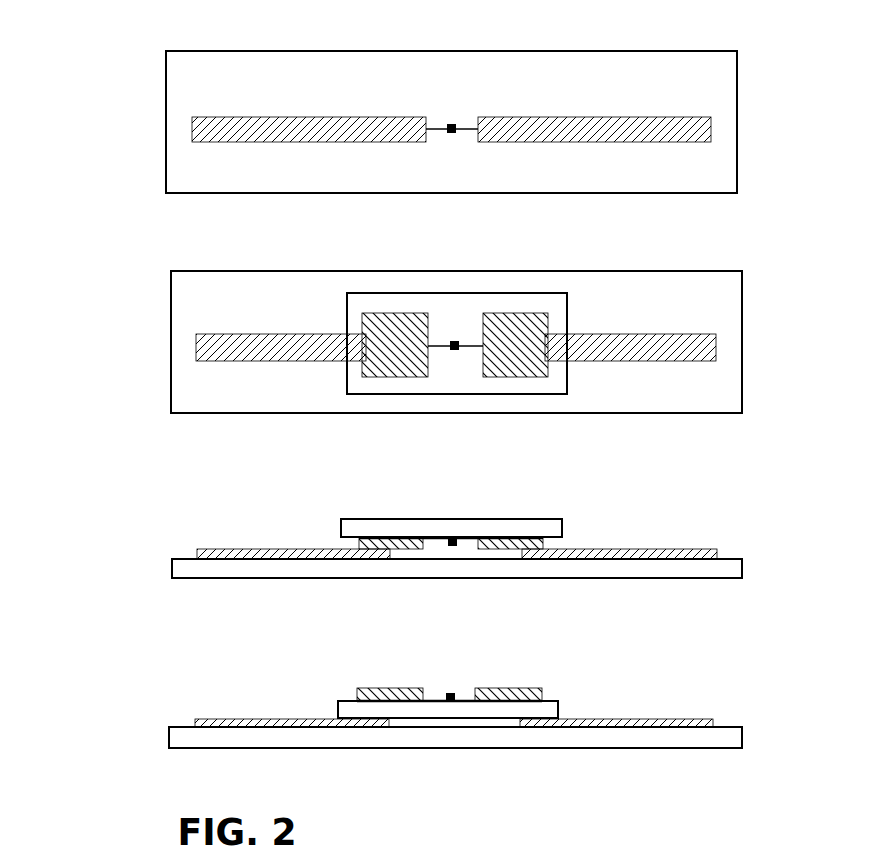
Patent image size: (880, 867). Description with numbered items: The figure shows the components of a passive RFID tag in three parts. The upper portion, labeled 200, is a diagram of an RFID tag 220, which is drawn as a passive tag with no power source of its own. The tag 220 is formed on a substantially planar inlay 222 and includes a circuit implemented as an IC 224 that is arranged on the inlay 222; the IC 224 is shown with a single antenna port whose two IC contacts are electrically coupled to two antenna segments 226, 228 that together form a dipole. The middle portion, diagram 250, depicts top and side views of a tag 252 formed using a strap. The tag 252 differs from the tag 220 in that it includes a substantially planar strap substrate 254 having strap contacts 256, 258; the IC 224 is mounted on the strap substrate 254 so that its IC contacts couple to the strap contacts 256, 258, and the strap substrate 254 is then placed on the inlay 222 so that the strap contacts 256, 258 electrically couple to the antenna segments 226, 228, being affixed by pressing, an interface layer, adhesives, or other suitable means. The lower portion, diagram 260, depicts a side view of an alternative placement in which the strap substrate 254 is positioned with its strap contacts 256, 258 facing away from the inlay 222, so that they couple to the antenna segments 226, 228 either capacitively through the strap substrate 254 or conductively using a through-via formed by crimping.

The top view of electronic assembly 200 is at (37, 42).
The RFID tag 220 is at (158, 117).
The inlay 222 is at (724, 87).
The IC 224 is at (452, 124).
The antenna segment 226 is at (336, 128).
The antenna segment 228 is at (583, 126).
The diagram 250 is at (30, 282).
The tag 252 is at (163, 419).
The strap substrate 254 is at (357, 386).
The strap contact 256 is at (400, 372).
The strap contact 258 is at (530, 372).
The diagram 260 is at (70, 710).